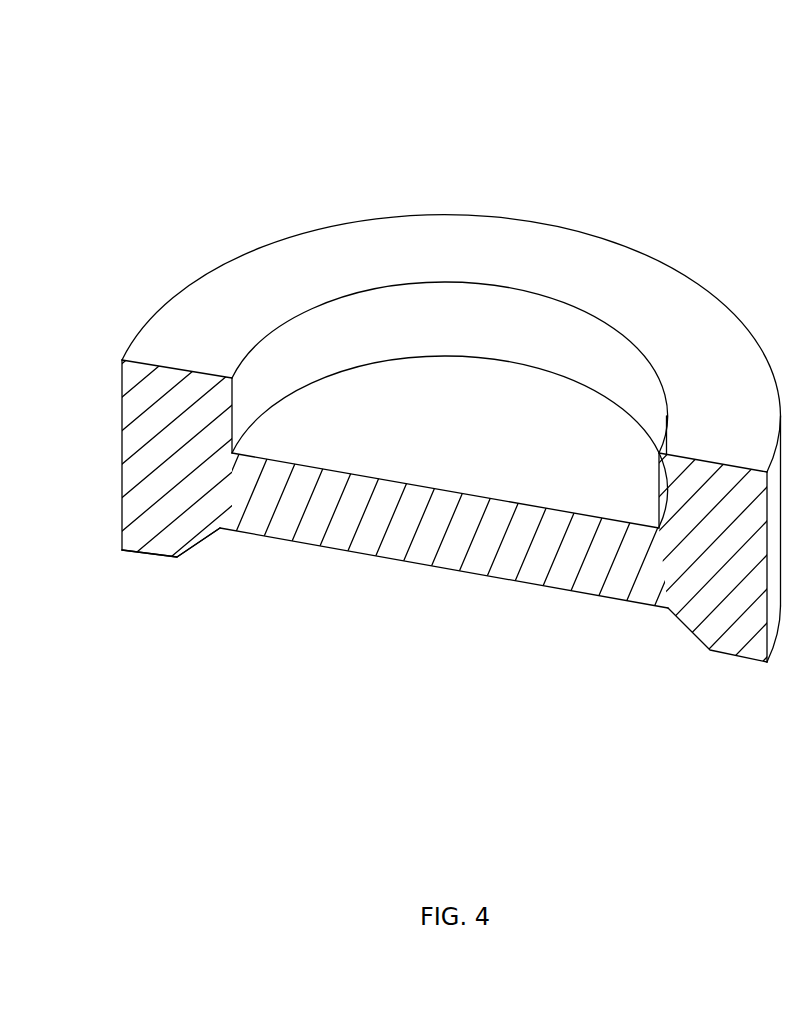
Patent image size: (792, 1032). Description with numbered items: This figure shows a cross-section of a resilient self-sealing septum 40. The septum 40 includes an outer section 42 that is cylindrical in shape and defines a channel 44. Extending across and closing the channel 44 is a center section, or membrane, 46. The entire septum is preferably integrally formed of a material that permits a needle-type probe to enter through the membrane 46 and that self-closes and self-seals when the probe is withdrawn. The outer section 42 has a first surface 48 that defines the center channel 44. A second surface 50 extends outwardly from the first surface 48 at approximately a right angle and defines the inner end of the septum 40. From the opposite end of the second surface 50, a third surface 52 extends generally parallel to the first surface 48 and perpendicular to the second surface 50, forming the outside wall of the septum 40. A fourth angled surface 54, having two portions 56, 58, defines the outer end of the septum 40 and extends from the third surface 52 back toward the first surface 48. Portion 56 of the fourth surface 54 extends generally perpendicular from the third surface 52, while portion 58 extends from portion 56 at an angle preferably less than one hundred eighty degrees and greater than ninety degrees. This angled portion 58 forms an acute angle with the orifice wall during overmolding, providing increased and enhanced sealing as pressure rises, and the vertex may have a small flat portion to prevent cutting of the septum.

The septum 40 is at (558, 193).
The outer section 42 is at (380, 260).
The channel 44 is at (317, 335).
The center section 46 is at (430, 527).
The first surface 48 is at (228, 400).
The second surface 50 is at (165, 365).
The third surface 52 is at (122, 450).
The fourth angled surface 54 is at (178, 568).
The portion of the fourth surface 56 is at (137, 553).
The portion of the fourth surface 58 is at (200, 542).